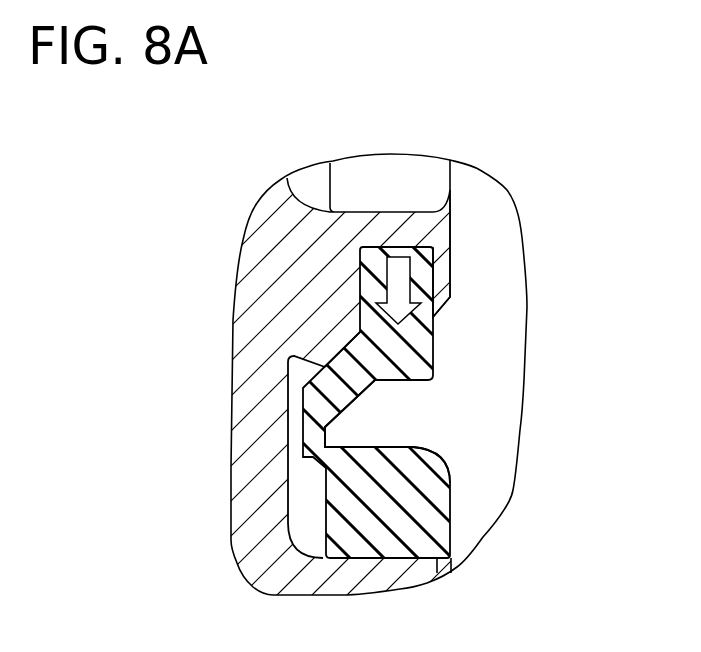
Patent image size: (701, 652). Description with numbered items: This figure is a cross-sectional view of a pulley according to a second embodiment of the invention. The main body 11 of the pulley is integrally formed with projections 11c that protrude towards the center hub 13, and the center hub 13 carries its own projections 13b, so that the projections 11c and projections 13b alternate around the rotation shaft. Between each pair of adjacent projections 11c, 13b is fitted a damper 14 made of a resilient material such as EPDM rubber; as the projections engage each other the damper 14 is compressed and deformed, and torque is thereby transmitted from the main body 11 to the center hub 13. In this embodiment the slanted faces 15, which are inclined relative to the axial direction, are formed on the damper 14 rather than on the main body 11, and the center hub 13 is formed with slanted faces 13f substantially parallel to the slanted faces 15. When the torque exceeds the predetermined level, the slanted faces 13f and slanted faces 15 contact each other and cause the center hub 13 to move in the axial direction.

The main body of the pulley 11 is at (497, 293).
The projections 11c is at (410, 430).
The center hub 13 is at (278, 232).
The projections 13b is at (403, 234).
The slanted faces 13f is at (325, 331).
The damper 14 is at (403, 357).
The slanted faces 15 is at (327, 358).